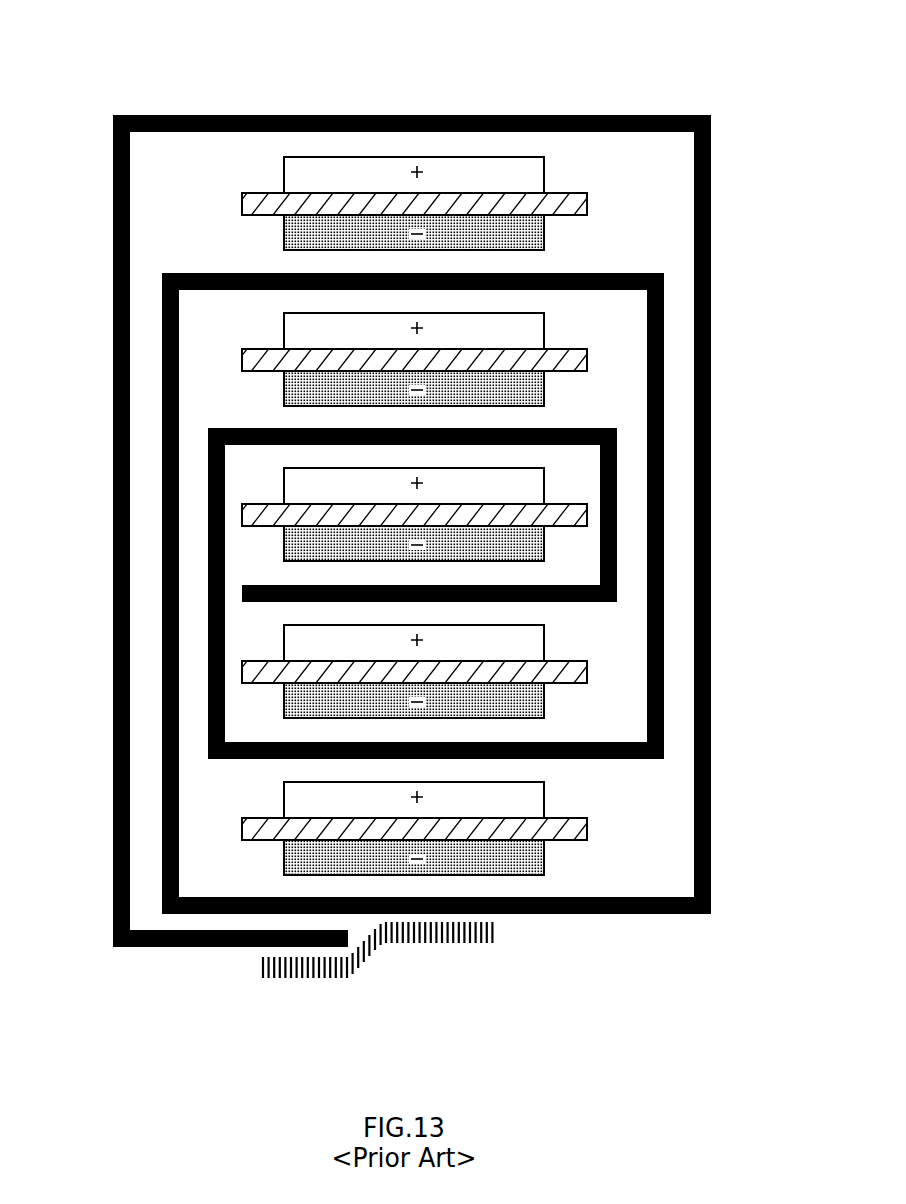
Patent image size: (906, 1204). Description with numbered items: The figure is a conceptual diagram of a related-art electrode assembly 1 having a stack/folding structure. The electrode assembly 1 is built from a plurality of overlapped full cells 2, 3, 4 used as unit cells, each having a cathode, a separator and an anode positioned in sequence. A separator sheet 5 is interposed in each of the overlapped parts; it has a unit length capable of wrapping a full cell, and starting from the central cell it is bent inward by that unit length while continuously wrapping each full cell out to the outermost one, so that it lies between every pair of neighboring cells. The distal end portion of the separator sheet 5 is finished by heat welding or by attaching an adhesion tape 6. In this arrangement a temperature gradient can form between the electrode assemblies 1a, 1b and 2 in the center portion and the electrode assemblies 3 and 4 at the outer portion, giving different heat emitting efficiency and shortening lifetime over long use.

The electrode assembly 1 is at (96, 78).
The electrode assembly (central full cell) 1a is at (532, 643).
The electrode assembly (central full cell) 1b is at (532, 487).
The full cell 2 is at (532, 330).
The full cell 3 is at (532, 799).
The full cell 4 is at (532, 174).
The separator sheet 5 is at (113, 548).
The adhesion tape 6 is at (390, 945).